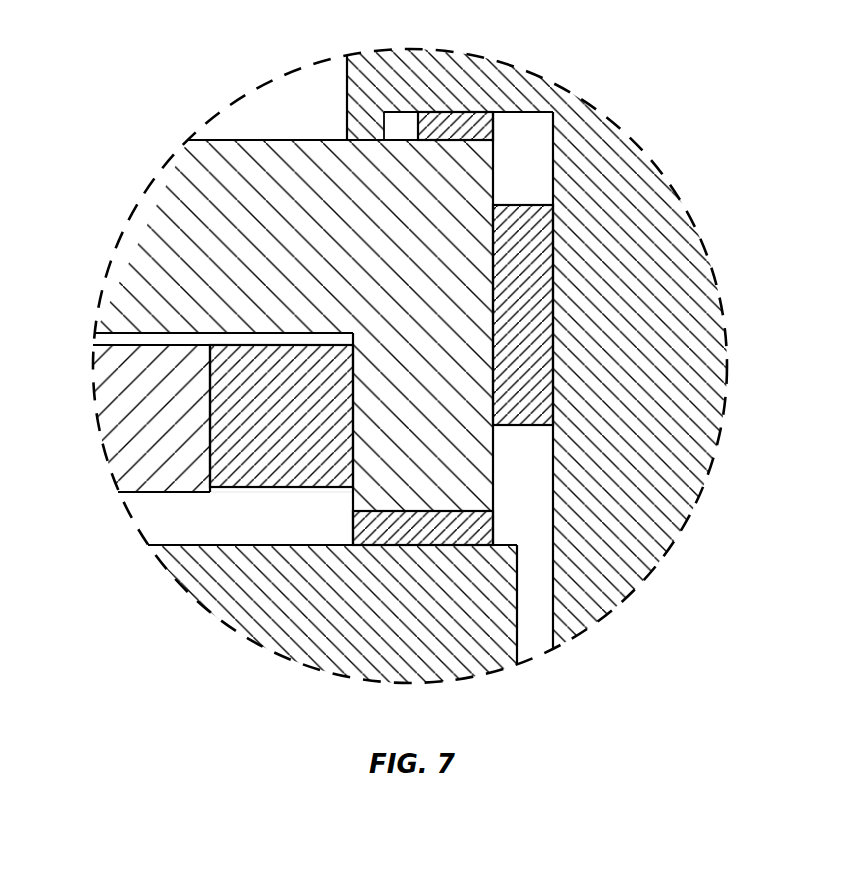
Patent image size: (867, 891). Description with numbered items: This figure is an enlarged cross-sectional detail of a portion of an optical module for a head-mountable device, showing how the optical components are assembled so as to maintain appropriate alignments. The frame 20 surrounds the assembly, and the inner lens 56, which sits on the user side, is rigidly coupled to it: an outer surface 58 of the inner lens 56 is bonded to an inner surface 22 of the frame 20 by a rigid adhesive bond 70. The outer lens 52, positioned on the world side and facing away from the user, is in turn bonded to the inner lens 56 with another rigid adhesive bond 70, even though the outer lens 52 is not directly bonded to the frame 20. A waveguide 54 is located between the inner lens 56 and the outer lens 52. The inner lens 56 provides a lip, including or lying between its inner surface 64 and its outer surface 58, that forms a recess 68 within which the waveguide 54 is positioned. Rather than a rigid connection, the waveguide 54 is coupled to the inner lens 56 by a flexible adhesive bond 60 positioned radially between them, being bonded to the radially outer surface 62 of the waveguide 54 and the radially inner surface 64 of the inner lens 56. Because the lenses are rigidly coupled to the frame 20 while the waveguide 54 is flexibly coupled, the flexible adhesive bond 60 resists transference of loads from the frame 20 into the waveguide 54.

The frame 20 is at (684, 247).
The inner surface of the frame 22 is at (553, 503).
The outer lens 52 is at (361, 655).
The waveguide 54 is at (103, 407).
The inner lens 56 is at (262, 160).
The outer surface of the inner lens 58 is at (494, 472).
The flexible adhesive bond 60 is at (281, 518).
The outer surface of the waveguide 62 is at (290, 466).
The inner surface of the inner lens 64 is at (352, 497).
The recess 68 is at (160, 508).
The rigid adhesive bond 70 is at (448, 121).